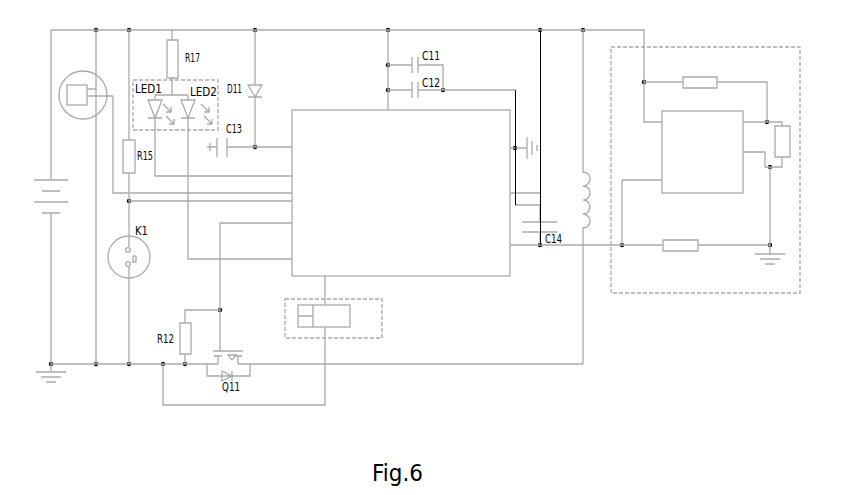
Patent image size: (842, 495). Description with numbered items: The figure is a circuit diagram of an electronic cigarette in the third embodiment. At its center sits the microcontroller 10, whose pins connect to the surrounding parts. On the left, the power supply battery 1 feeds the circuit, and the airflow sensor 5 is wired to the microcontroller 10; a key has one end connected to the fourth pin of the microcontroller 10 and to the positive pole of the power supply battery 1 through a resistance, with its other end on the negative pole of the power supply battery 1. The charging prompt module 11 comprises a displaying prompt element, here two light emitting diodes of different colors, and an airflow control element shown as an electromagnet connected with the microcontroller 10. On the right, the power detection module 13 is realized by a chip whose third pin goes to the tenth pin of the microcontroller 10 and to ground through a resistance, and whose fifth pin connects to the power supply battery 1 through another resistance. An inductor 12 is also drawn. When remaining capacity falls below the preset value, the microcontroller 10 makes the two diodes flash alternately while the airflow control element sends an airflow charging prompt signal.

The power supply battery 1 is at (42, 206).
The airflow sensor 5 is at (83, 71).
The microcontroller 10 is at (403, 194).
The charging prompt module 11 is at (420, 308).
The inductor 12 is at (577, 197).
The power detection module 13 is at (705, 47).